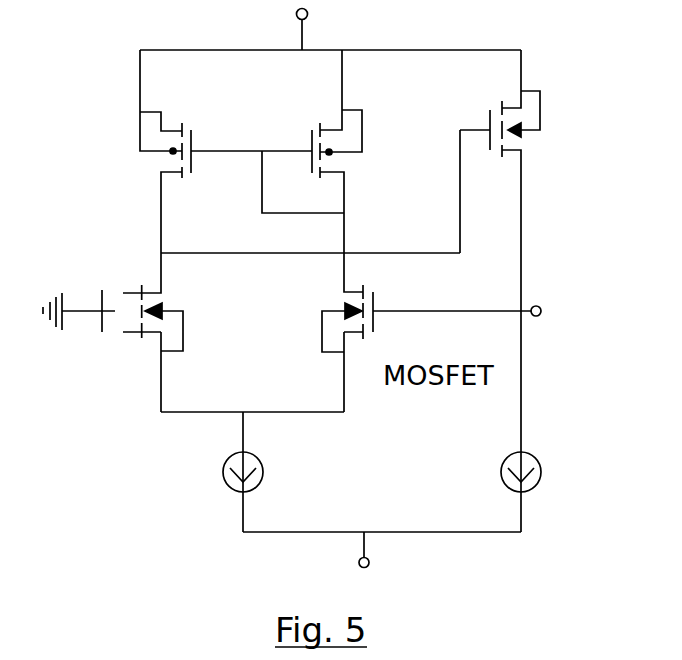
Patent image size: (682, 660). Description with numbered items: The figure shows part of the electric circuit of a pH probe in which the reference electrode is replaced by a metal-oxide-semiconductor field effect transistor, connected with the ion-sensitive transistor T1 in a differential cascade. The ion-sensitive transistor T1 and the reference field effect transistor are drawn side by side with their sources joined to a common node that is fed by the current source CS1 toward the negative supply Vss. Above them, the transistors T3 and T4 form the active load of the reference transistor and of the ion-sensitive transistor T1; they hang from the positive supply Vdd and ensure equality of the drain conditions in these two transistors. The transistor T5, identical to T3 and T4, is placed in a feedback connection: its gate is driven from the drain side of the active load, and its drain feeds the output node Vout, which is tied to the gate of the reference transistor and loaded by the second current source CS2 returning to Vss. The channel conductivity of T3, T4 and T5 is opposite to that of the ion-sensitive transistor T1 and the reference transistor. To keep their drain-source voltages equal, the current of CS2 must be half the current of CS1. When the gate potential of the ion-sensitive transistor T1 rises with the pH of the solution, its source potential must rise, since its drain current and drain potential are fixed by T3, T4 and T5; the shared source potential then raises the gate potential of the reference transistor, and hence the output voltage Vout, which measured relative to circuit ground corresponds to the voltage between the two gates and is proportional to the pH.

The ISFET transistor T1 is at (106, 332).
The active load transistor T3 is at (142, 151).
The active load transistor T4 is at (362, 151).
The feedback transistor T5 is at (522, 291).
The current source CS1 is at (216, 472).
The current source CS2 is at (492, 463).
The supply voltage Vdd is at (336, 29).
The supply voltage Vss is at (392, 553).
The output voltage Vout is at (568, 295).